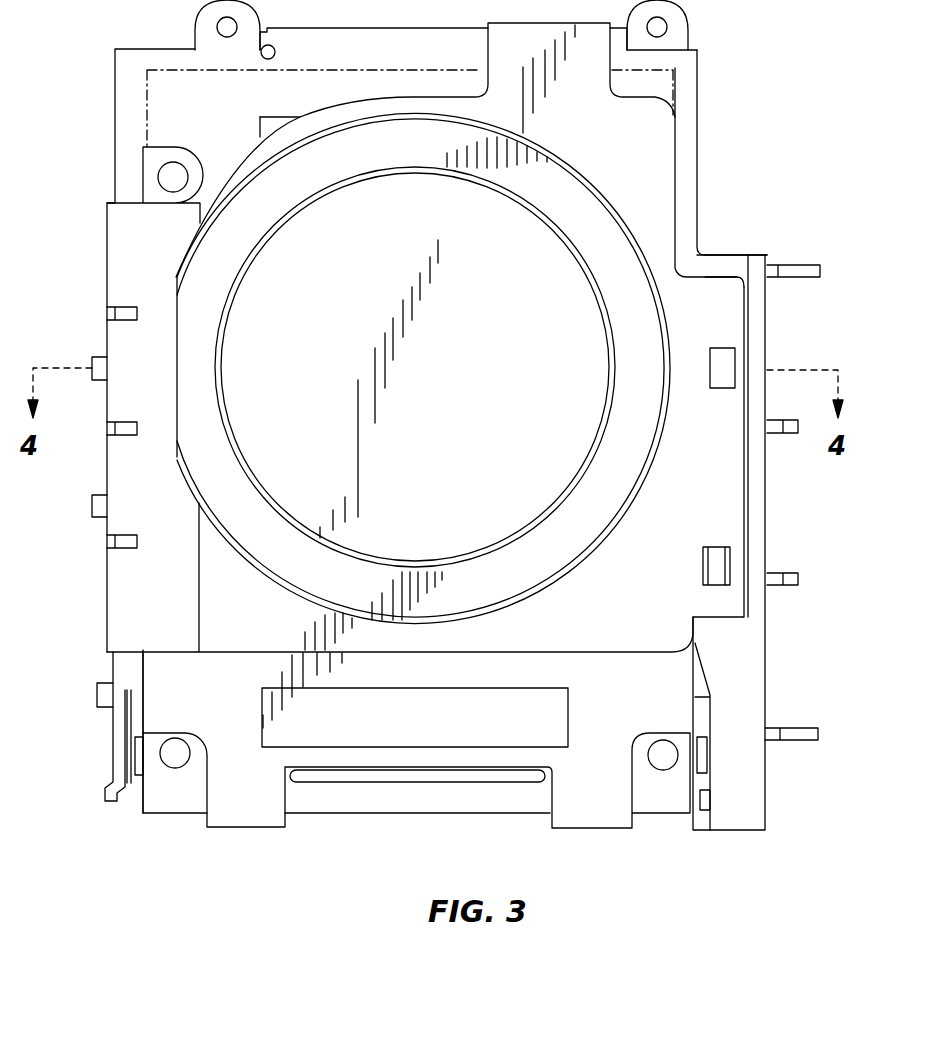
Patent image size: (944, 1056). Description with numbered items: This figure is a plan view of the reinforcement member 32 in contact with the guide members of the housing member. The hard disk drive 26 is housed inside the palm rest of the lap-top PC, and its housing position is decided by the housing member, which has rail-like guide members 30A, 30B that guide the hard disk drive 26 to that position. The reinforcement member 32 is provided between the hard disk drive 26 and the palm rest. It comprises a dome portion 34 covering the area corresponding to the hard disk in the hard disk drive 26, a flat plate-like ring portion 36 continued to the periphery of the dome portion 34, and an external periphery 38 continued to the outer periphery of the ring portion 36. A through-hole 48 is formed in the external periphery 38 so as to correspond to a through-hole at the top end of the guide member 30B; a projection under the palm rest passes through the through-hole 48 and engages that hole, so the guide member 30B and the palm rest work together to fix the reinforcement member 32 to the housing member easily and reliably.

The hard disk drive 26 is at (183, 93).
The guide member 30A is at (117, 672).
The guide member 30B is at (750, 668).
The reinforcement member 32 is at (662, 160).
The dome portion 34 is at (573, 351).
The ring portion 36 is at (622, 480).
The external periphery 38 is at (703, 293).
The through-hole 48 is at (730, 355).